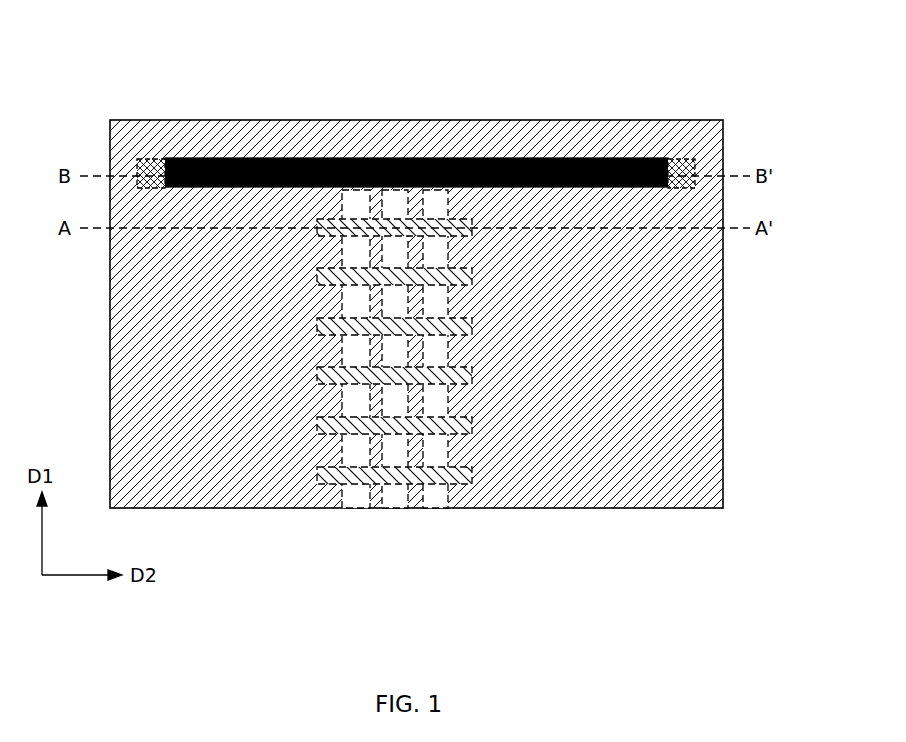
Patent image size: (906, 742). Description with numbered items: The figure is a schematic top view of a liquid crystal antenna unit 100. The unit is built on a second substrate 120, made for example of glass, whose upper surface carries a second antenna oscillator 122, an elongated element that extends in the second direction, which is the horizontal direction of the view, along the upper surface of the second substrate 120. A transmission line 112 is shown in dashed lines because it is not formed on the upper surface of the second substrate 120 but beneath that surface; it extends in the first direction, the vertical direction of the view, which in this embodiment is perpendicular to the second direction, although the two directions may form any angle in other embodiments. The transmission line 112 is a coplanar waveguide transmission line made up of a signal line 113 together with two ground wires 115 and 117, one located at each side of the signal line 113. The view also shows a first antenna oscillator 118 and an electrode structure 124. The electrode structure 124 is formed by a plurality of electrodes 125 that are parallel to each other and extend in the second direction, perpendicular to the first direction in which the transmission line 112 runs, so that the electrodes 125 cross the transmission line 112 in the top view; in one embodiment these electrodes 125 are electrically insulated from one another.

The liquid crystal antenna unit 100 is at (470, 80).
The transmission line 112 is at (500, 600).
The signal line 113 is at (400, 497).
The ground wire 115 is at (352, 497).
The ground wire 117 is at (443, 497).
The first antenna oscillator 118 is at (683, 160).
The second substrate 120 is at (723, 293).
The second antenna oscillator 122 is at (563, 157).
The electrode structure 124 is at (495, 217).
The electrode 125 is at (466, 472).